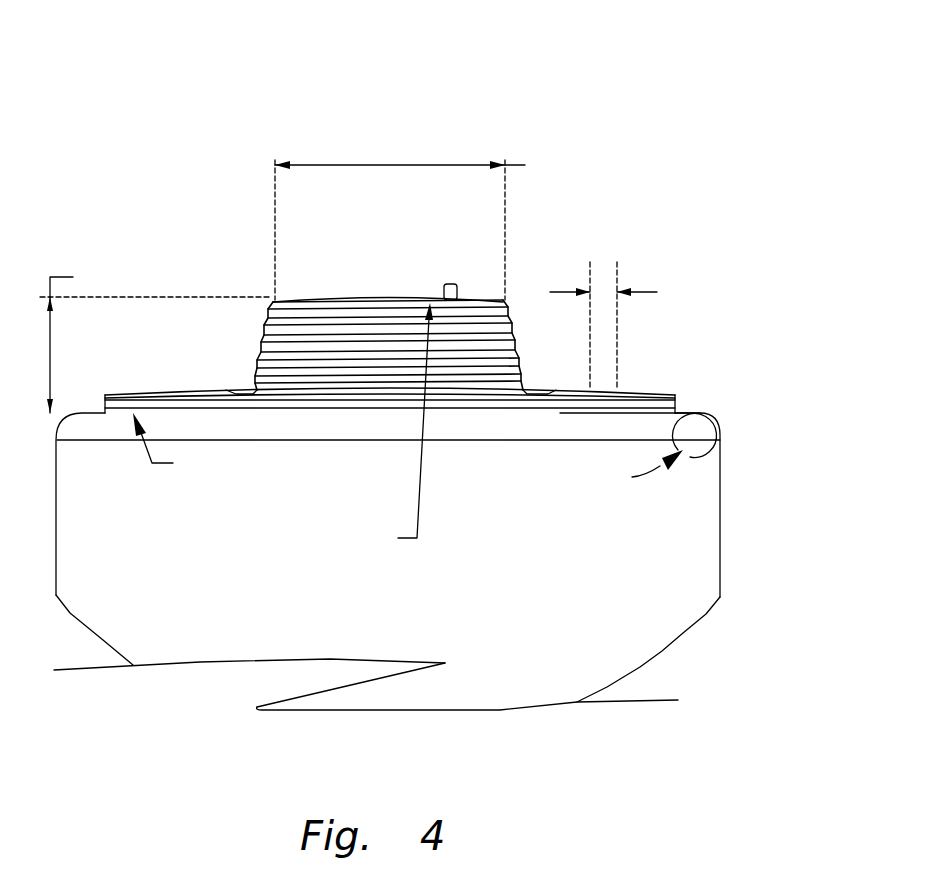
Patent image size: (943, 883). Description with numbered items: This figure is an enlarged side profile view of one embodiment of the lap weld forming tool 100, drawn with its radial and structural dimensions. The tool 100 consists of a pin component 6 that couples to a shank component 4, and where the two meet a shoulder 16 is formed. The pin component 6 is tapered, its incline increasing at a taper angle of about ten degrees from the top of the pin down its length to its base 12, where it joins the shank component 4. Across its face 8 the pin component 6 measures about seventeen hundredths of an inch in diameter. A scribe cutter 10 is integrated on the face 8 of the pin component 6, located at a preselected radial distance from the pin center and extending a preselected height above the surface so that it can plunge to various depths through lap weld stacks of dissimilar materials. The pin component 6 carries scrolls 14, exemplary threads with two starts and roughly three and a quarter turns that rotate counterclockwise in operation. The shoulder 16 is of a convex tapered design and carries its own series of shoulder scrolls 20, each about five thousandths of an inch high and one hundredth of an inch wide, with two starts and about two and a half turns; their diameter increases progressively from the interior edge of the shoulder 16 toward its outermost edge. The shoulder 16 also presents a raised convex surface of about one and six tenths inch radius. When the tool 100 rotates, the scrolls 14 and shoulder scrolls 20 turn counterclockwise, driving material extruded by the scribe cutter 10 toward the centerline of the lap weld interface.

The lap weld forming tool 100 is at (140, 84).
The shank component 4 is at (380, 488).
The pin component 6 is at (347, 298).
The face 8 is at (512, 300).
The scribe cutter 10 is at (440, 294).
The base 12 is at (254, 382).
The scrolls 14 is at (530, 305).
The shoulder 16 is at (148, 395).
The shoulder scrolls 20 is at (505, 386).